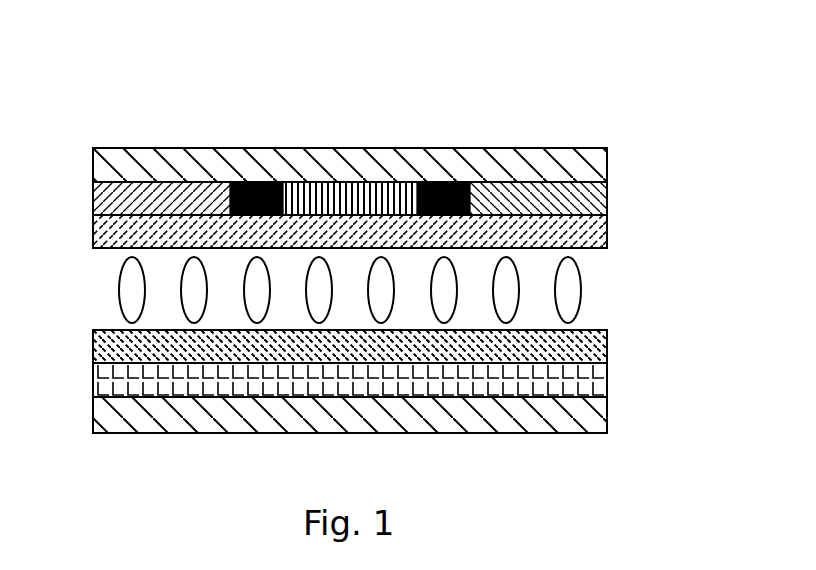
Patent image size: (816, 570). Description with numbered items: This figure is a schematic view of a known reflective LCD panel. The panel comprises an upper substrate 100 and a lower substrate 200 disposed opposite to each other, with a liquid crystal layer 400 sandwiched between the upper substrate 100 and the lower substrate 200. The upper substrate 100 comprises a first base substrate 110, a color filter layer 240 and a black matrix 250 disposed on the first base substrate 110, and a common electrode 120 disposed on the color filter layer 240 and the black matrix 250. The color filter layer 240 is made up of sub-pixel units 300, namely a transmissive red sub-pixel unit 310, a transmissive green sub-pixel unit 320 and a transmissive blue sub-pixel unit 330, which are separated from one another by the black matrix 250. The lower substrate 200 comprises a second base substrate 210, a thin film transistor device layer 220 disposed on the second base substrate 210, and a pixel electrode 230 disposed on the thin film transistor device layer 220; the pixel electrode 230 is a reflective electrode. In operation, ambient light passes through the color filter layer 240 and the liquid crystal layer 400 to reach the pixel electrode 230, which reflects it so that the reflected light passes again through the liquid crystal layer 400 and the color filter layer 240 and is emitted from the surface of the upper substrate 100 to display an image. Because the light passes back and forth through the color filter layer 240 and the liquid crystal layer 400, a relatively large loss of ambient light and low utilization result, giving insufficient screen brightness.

The upper substrate 100 is at (88, 150).
The first base substrate 110 is at (587, 168).
The common electrode 120 is at (587, 235).
The lower substrate 200 is at (88, 331).
The second base substrate 210 is at (587, 420).
The thin film transistor device layer 220 is at (587, 388).
The pixel electrode 230 is at (587, 357).
The color filter layer 240 is at (587, 205).
The black matrix 250 is at (252, 190).
The sub-pixel units 300 is at (580, 67).
The transmissive red sub-pixel unit 310 is at (157, 197).
The transmissive green sub-pixel unit 320 is at (345, 200).
The transmissive blue sub-pixel unit 330 is at (542, 200).
The liquid crystal layer 400 is at (128, 295).